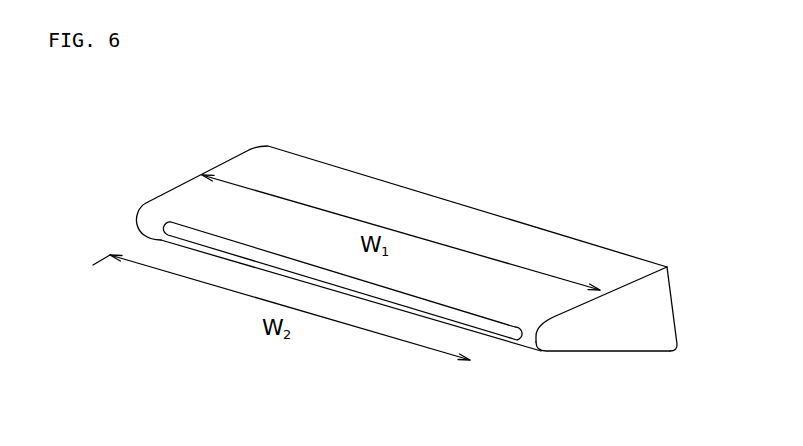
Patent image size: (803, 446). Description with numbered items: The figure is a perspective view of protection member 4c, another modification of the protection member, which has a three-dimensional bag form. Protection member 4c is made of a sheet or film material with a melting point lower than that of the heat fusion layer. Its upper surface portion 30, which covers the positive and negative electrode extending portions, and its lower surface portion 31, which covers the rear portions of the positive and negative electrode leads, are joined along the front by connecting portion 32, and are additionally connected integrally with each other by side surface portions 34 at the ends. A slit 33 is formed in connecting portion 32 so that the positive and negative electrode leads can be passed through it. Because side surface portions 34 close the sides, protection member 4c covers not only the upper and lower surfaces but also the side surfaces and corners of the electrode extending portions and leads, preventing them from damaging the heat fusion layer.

The protection member 4c is at (421, 255).
The upper surface portion 30 is at (522, 250).
The lower surface portion 31 is at (605, 351).
The connecting portion 32 is at (528, 338).
The slit 33 is at (178, 231).
The side surface portions 34 is at (665, 309).